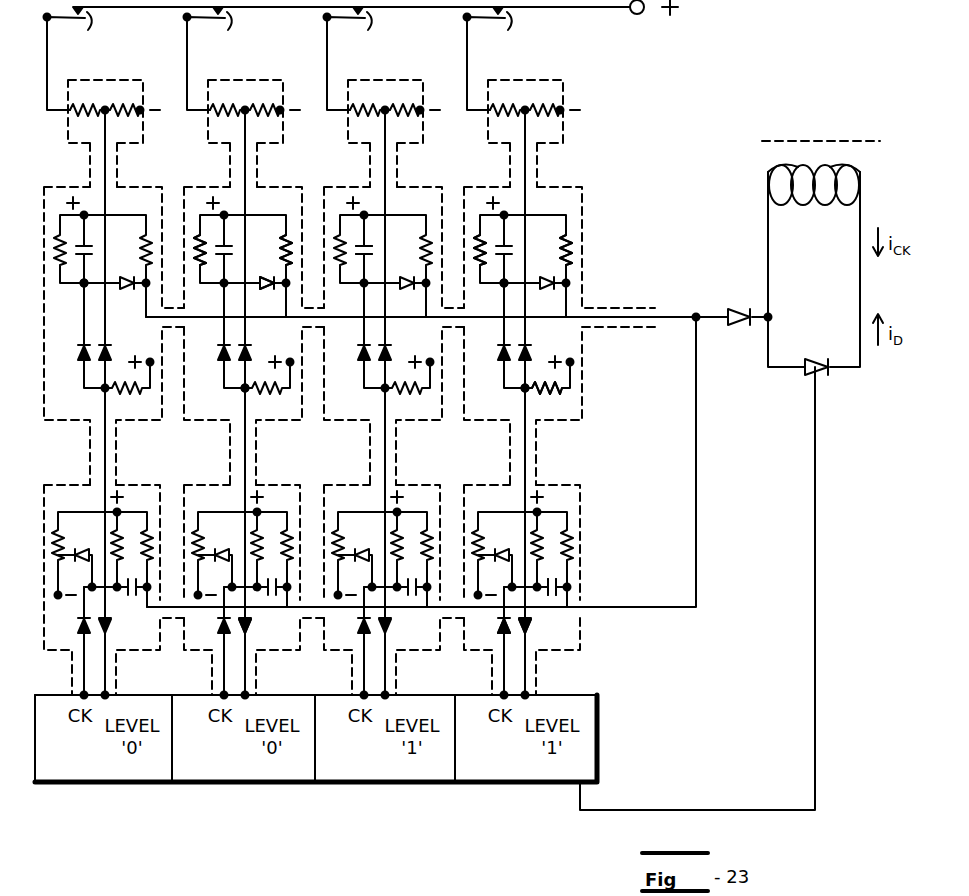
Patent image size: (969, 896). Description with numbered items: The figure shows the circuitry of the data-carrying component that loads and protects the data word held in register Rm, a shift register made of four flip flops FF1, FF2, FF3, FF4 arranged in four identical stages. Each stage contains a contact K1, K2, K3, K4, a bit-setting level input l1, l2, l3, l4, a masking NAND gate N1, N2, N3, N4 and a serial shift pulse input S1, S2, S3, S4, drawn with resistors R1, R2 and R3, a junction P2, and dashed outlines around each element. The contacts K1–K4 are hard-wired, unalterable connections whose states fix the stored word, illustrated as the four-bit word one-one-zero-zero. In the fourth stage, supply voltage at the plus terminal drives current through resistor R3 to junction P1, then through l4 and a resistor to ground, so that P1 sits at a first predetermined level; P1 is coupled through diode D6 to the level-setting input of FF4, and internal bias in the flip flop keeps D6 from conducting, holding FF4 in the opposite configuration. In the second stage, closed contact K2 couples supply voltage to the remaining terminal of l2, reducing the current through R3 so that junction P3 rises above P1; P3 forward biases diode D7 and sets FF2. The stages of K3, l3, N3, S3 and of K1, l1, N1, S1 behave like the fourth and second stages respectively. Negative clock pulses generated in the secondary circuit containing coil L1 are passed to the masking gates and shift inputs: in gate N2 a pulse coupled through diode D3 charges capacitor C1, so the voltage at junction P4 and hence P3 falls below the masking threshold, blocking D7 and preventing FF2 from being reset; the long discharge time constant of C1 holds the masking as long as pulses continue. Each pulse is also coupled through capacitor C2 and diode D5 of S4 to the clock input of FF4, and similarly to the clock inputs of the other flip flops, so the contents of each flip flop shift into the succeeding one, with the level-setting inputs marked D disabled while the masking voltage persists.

The contact K1 is at (70, 58).
The contact K2 is at (210, 58).
The contact K3 is at (350, 58).
The contact K4 is at (490, 58).
The bit-setting level input l1 is at (114, 80).
The bit-setting level input l2 is at (254, 112).
The bit-setting level input l3 is at (394, 112).
The bit-setting level input l4 is at (534, 112).
The masking NAND gate N1 is at (68, 393).
The masking NAND gate N2 is at (244, 336).
The masking NAND gate N3 is at (384, 336).
The masking NAND gate N4 is at (549, 336).
The serial shift pulse input S1 is at (146, 502).
The serial shift pulse input S2 is at (254, 576).
The serial shift pulse input S3 is at (394, 576).
The serial shift pulse input S4 is at (522, 576).
The resistor R1 is at (295, 248).
The resistor R2 is at (197, 244).
The resistor R3 is at (562, 408).
The register Rm is at (588, 773).
The capacitor C1 is at (371, 232).
The capacitor C2 is at (565, 576).
The diode D3 is at (280, 282).
The diode D5 is at (500, 632).
The diode D6 is at (534, 632).
The diode D7 is at (260, 636).
The data input D is at (111, 696).
The junction P1 is at (534, 384).
The point P2 is at (512, 280).
The junction P3 is at (243, 392).
The junction P4 is at (77, 290).
The coil L1 is at (770, 164).
The flip flop FF1 is at (103, 756).
The flip flop FF2 is at (243, 756).
The flip flop FF3 is at (385, 756).
The flip flop FF4 is at (526, 756).